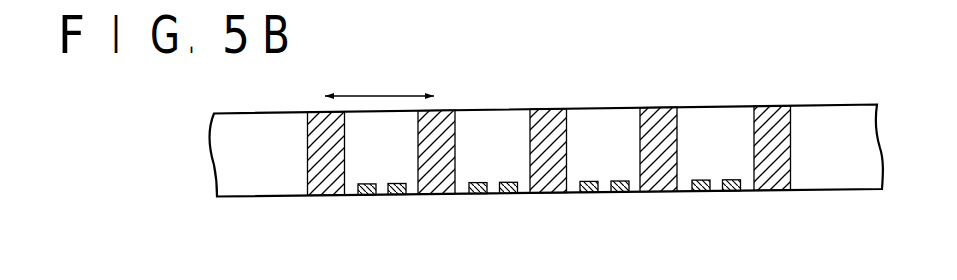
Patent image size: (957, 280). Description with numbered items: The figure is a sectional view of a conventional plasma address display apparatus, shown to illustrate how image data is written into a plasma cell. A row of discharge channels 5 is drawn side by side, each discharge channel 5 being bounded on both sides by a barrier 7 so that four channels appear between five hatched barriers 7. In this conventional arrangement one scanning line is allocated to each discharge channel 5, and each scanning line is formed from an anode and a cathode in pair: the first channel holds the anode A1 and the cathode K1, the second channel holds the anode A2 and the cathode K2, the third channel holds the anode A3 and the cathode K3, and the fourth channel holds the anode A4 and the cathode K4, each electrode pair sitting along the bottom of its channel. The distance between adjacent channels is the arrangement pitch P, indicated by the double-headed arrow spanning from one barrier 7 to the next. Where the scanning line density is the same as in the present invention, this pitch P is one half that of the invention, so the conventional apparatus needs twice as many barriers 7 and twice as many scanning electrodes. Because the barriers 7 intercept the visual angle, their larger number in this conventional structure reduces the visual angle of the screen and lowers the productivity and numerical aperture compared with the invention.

The discharge channel 5 is at (697, 128).
The barrier 7 is at (771, 113).
The arrangement pitch P is at (379, 82).
The anode A1 is at (364, 196).
The cathode K1 is at (397, 196).
The anode A2 is at (476, 195).
The cathode K2 is at (508, 194).
The anode A3 is at (588, 194).
The cathode K3 is at (620, 193).
The anode A4 is at (700, 192).
The cathode K4 is at (731, 192).